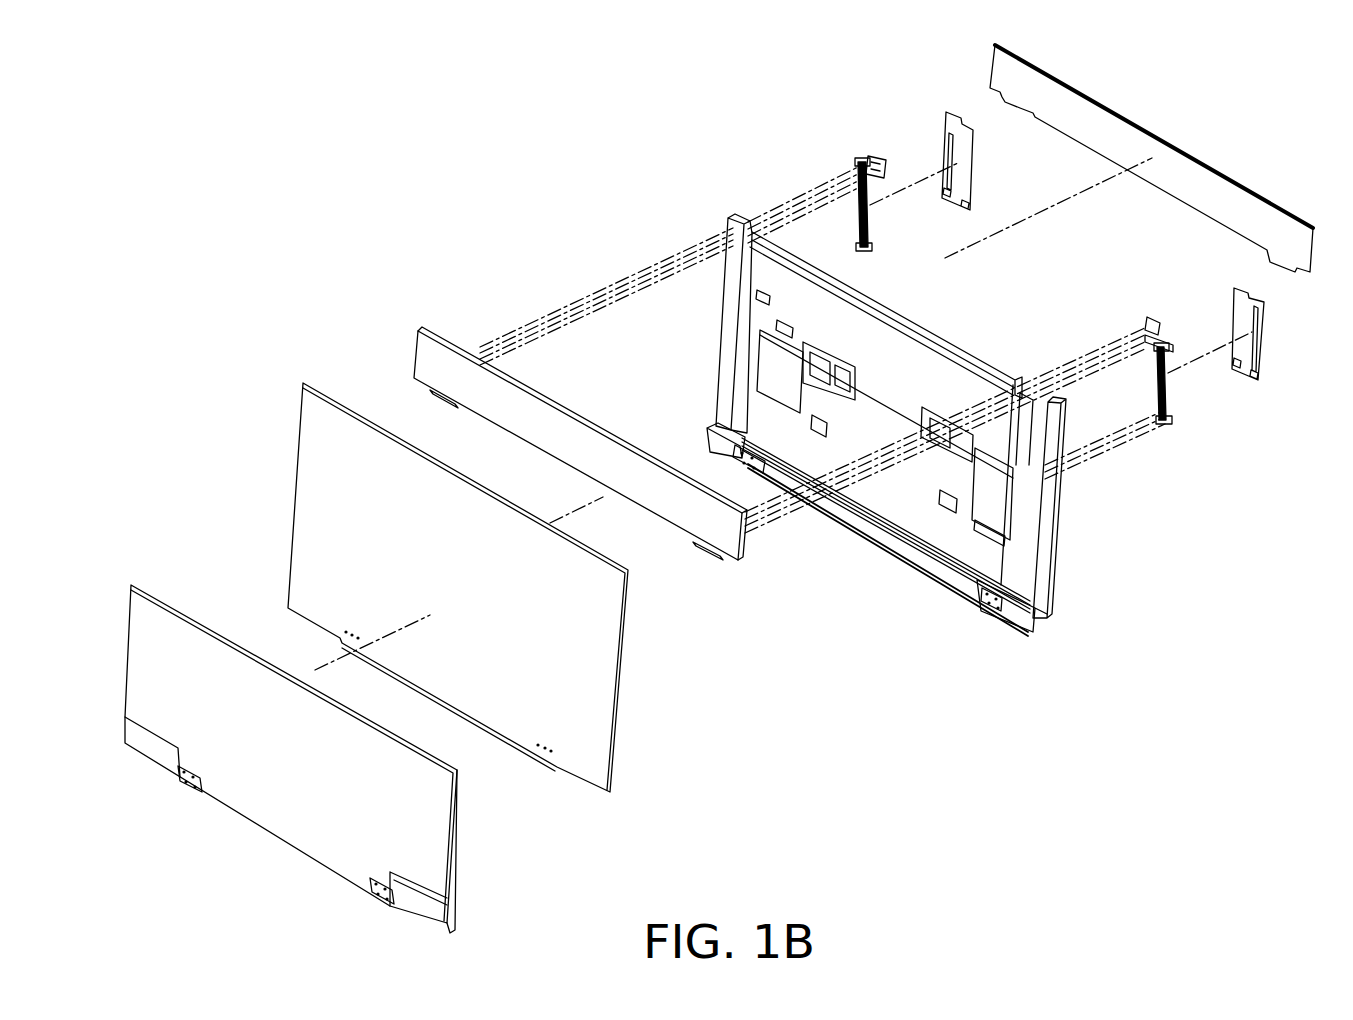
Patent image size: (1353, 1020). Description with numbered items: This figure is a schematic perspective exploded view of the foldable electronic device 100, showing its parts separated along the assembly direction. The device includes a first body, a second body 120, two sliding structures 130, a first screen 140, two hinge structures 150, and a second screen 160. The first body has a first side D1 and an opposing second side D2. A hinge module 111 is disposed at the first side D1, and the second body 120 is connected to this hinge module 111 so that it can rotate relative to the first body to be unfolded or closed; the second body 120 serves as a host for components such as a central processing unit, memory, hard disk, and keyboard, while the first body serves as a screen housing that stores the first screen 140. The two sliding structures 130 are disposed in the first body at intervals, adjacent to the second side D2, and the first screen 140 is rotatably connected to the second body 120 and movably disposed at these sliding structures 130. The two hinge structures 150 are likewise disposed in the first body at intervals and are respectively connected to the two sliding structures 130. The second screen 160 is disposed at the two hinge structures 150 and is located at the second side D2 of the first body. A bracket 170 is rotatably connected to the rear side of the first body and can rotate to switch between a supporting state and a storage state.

The foldable electronic device 100 is at (1345, 891).
The hinge module 111 is at (985, 612).
The second body 120 is at (428, 823).
The sliding structure 130 is at (870, 220).
The first screen 140 is at (578, 667).
The hinge structure 150 is at (881, 158).
The second screen 160 is at (723, 532).
The bracket 170 is at (1052, 548).
The first side D1 is at (1037, 615).
The second side D2 is at (996, 368).